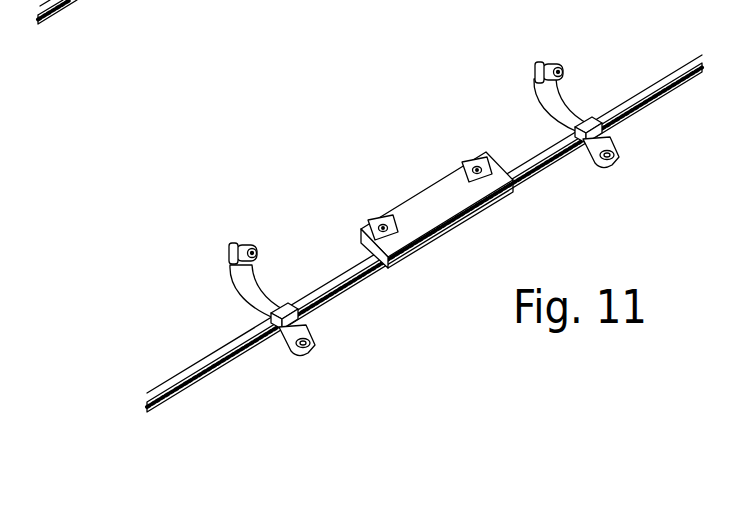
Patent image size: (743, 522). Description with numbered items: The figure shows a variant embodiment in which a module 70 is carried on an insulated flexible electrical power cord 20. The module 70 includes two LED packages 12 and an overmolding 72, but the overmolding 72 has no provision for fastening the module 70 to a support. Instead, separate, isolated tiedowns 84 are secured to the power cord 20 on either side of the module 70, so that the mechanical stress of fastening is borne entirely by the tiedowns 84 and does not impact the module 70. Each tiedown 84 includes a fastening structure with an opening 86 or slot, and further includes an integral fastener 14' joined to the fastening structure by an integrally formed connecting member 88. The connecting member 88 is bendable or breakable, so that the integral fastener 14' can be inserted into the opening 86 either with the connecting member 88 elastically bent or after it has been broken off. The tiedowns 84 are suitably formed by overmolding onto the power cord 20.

The insulated flexible electrical power cord 20 is at (688, 81).
The module 70 is at (418, 174).
The overmolding 72 is at (457, 223).
The LED package 12 is at (382, 226).
The connecting member 88 is at (242, 288).
The integral fastener 14' is at (367, 137).
The opening 86 is at (308, 331).
The tiedown 84 is at (327, 371).